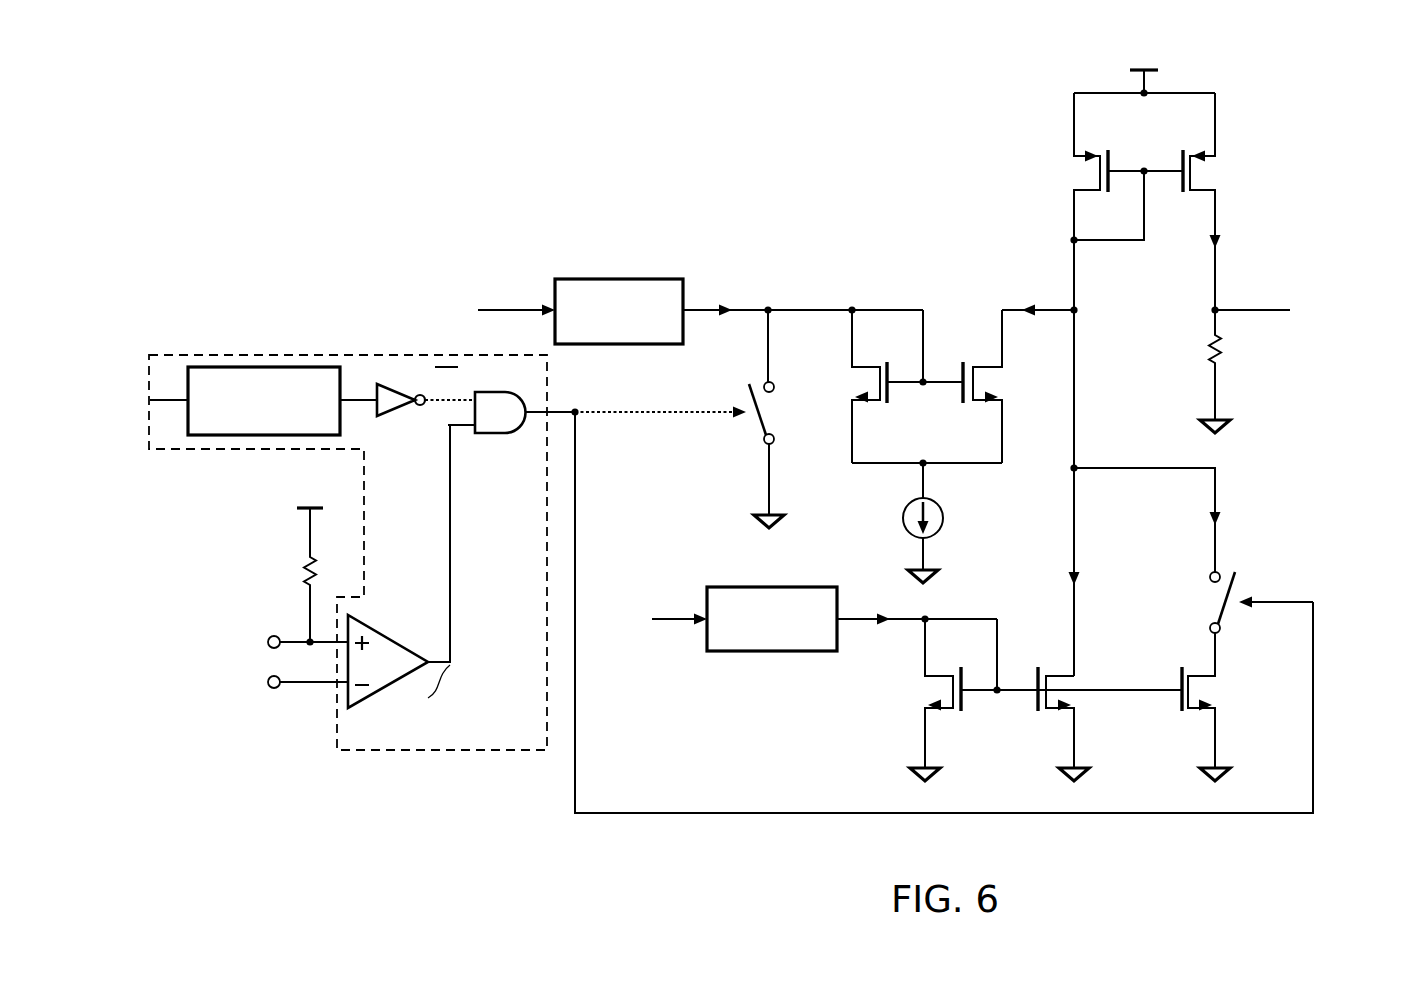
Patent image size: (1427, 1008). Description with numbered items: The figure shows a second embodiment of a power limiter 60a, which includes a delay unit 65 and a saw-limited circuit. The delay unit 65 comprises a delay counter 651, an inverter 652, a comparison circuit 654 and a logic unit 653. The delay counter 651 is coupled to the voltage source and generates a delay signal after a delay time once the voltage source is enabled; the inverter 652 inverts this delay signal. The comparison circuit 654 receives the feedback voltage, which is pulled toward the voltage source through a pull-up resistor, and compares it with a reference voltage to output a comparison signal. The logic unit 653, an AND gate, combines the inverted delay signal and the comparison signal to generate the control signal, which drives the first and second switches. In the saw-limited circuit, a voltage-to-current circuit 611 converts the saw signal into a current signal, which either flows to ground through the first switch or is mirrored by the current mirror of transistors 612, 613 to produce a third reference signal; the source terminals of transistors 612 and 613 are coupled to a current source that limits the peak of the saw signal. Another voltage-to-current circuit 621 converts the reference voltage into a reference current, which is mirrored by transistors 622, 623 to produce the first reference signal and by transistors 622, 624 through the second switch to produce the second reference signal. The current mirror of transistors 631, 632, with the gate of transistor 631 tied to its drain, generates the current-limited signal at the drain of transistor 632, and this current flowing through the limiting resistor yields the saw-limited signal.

The power limiter 60a is at (1426, 72).
The delay unit 65 is at (337, 750).
The delay counter 651 is at (265, 367).
The inverter 652 is at (402, 388).
The logic unit 653 is at (497, 434).
The comparison circuit 654 is at (395, 640).
The voltage-to-current circuit 611 is at (583, 279).
The transistor 612 is at (886, 403).
The transistor 613 is at (965, 361).
The voltage-to-current circuit 621 is at (736, 587).
The transistor 622 is at (960, 712).
The transistor 623 is at (1038, 712).
The transistor 624 is at (1180, 712).
The transistor 631 is at (1108, 150).
The transistor 632 is at (1182, 192).